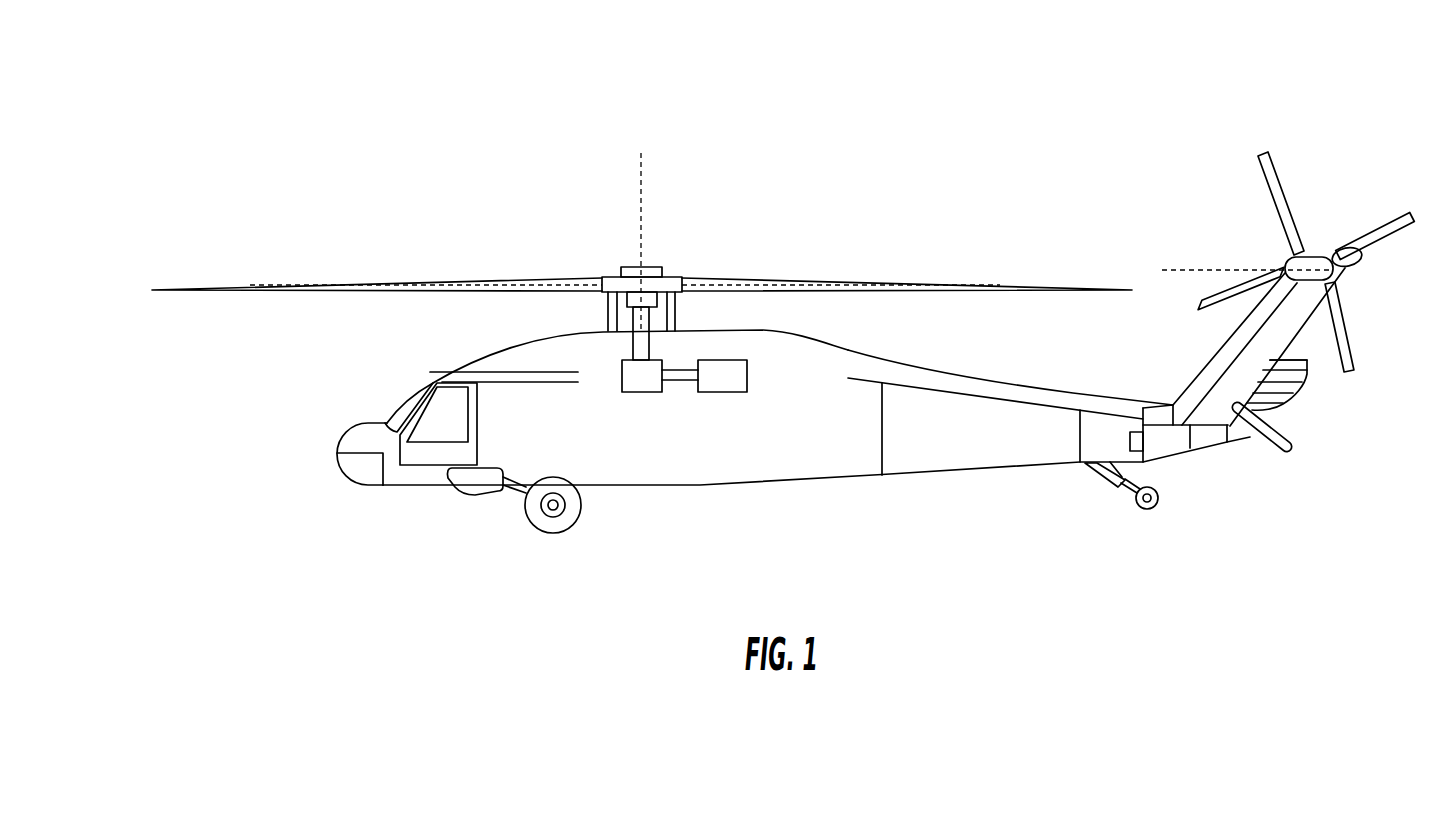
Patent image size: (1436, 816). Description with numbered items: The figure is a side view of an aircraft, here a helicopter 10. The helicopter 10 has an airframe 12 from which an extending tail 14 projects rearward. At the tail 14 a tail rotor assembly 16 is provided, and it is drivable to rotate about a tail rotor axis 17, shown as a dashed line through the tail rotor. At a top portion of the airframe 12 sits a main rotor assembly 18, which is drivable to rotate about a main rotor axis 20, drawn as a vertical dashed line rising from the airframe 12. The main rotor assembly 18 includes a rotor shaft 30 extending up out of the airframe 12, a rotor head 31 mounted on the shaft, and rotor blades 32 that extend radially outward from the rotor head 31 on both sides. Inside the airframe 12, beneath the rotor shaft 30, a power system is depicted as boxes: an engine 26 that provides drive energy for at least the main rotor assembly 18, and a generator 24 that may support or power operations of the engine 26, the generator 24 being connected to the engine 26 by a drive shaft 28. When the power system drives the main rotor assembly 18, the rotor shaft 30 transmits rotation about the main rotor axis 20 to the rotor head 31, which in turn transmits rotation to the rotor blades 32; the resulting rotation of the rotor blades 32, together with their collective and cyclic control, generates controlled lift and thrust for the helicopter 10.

The helicopter 10 is at (278, 175).
The airframe 12 is at (653, 470).
The extending tail 14 is at (1037, 435).
The tail rotor assembly 16 is at (1335, 343).
The tail rotor axis 17 is at (1227, 268).
The main rotor assembly 18 is at (448, 282).
The main rotor axis 20 is at (642, 213).
The generator 24 is at (748, 378).
The engine 26 is at (622, 383).
The drive shaft 28 is at (682, 383).
The rotor shaft 30 is at (640, 322).
The rotor head 31 is at (663, 283).
The rotor blades 32 is at (885, 282).